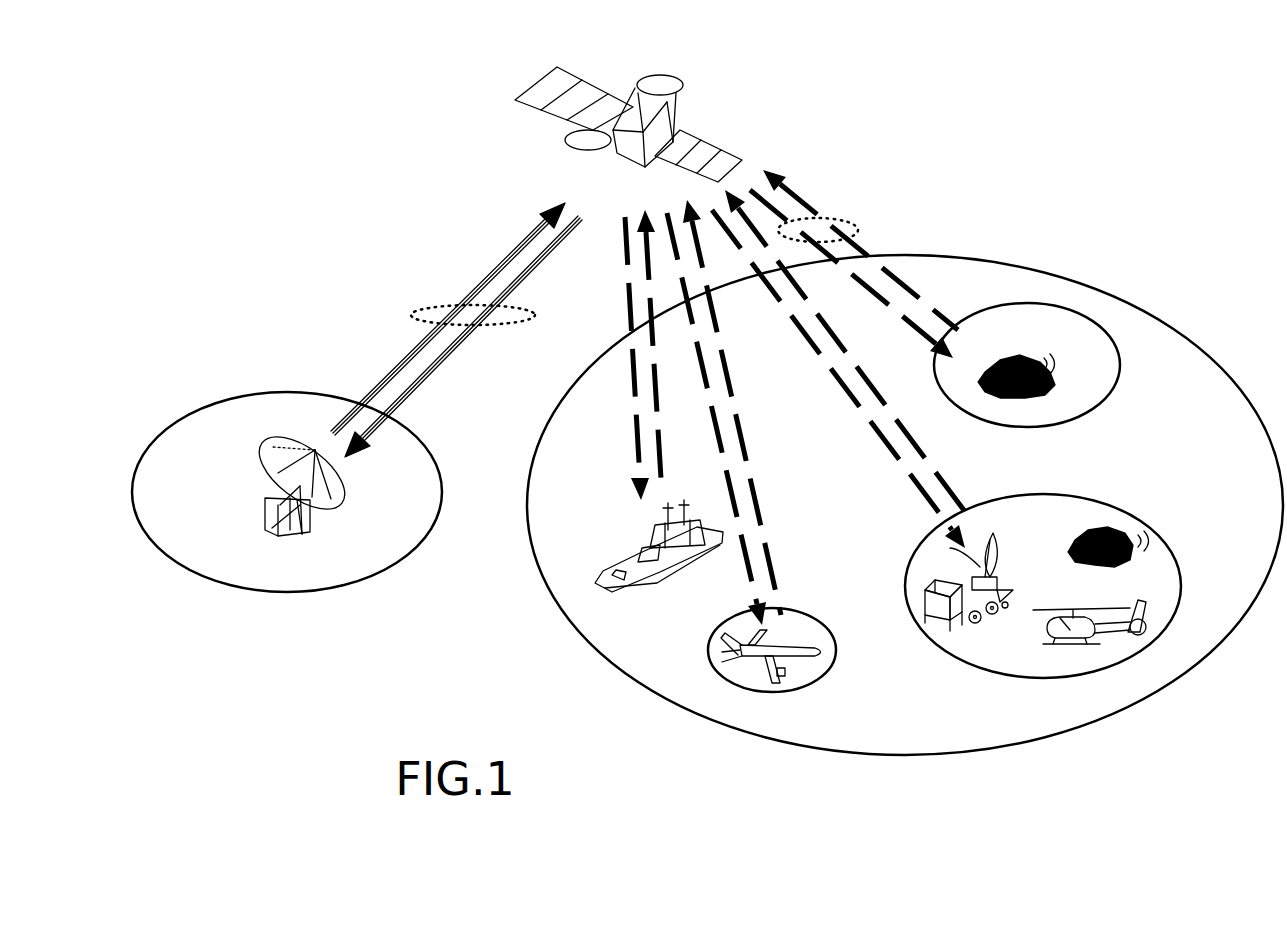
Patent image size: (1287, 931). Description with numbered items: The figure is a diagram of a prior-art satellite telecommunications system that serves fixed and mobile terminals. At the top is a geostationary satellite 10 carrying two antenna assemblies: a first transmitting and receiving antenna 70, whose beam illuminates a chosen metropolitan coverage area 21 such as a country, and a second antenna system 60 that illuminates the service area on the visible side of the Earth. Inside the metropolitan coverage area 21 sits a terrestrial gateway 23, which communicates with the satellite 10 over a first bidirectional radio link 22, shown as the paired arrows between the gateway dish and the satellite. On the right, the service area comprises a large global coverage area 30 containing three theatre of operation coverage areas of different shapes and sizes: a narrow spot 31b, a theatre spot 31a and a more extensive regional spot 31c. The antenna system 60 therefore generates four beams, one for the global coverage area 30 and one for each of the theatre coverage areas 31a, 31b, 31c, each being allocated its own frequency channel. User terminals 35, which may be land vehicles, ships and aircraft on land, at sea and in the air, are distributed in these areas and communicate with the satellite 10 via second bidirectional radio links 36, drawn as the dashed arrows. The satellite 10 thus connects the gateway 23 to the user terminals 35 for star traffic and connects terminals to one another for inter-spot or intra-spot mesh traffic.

The geostationary satellite 10 is at (633, 90).
The second antenna system 60 is at (683, 88).
The first transmitting and receiving antenna 70 is at (567, 140).
The first bidirectional radio link 22 is at (405, 315).
The metropolitan coverage area 21 is at (377, 572).
The terrestrial gateway 23 is at (270, 480).
The global coverage area 30 is at (1177, 685).
The second bidirectional radio links 36 is at (862, 230).
The user terminals 35 is at (655, 538).
The theatre spot 31a is at (1110, 390).
The narrow spot 31b is at (820, 685).
The regional spot 31c is at (905, 585).